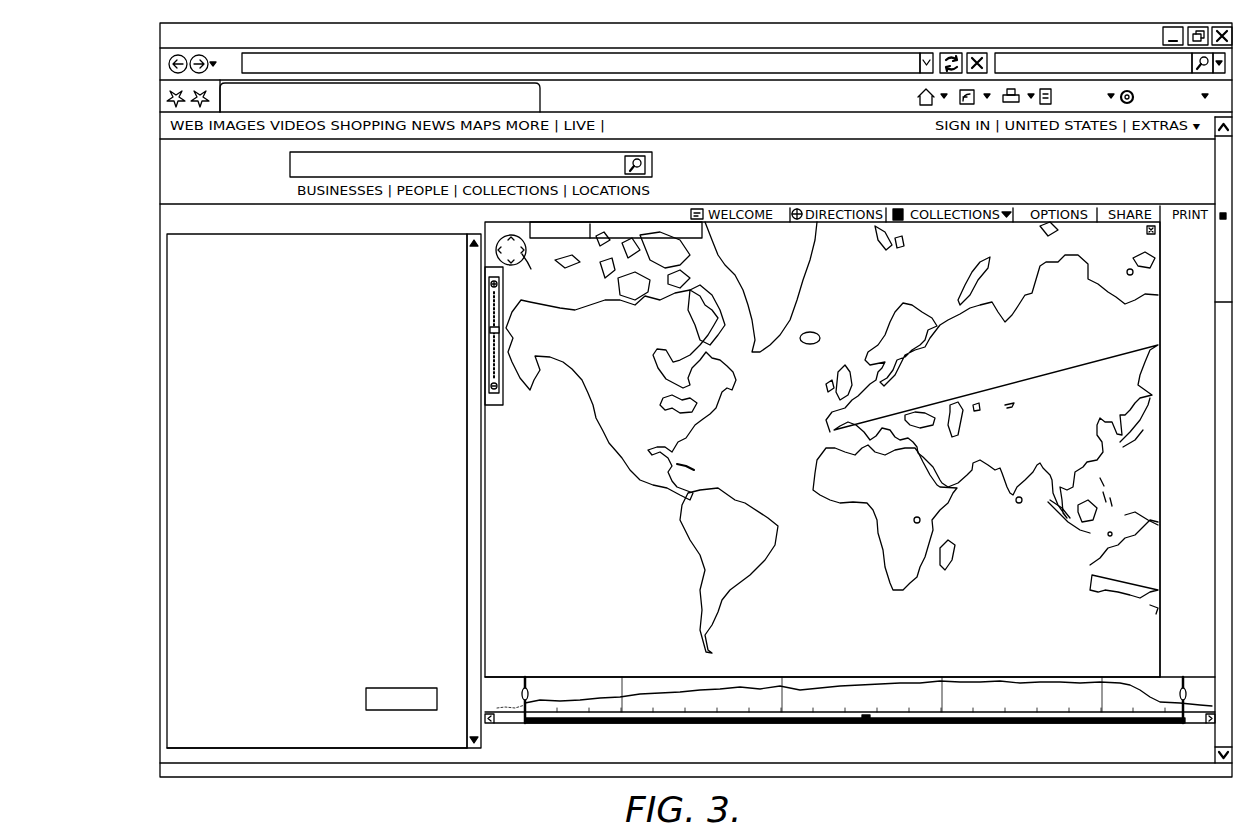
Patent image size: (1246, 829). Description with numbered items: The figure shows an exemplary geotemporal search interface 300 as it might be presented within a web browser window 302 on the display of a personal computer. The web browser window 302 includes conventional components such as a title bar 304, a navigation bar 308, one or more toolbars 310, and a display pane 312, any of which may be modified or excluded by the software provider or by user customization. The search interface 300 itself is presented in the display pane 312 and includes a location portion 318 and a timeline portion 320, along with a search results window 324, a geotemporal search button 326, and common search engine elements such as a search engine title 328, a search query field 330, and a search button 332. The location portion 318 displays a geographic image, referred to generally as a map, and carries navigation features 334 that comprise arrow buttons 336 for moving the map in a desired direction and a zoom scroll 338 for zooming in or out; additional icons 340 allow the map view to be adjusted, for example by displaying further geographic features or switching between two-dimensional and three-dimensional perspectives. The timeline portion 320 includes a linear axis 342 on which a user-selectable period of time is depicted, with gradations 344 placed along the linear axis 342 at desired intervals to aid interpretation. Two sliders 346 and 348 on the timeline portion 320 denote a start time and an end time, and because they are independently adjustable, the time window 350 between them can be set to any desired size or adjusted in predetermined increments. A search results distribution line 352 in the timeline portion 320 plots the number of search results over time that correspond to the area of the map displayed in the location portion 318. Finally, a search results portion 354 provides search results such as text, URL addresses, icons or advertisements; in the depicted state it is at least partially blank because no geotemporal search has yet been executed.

The search interface 300 is at (152, 148).
The web browser window 302 is at (352, 781).
The title bar 304 is at (160, 38).
The navigation bar 308 is at (160, 70).
The toolbars 310 is at (160, 100).
The display pane 312 is at (142, 305).
The location portion 318 is at (490, 460).
The timeline portion 320 is at (1023, 748).
The search results window 324 is at (280, 742).
The geotemporal search button 326 is at (404, 688).
The search engine title 328 is at (185, 160).
The search query field 330 is at (612, 153).
The search button 332 is at (645, 178).
The navigation features 334 is at (487, 268).
The arrow buttons 336 is at (528, 273).
The zoom scroll 338 is at (494, 331).
The icons 340 is at (597, 239).
The linear axis 342 is at (726, 716).
The gradations 344 is at (942, 690).
The slider 346 is at (530, 690).
The slider 348 is at (1184, 688).
The time window 350 is at (798, 722).
The search results distribution line 352 is at (777, 690).
The search results portion 354 is at (324, 491).